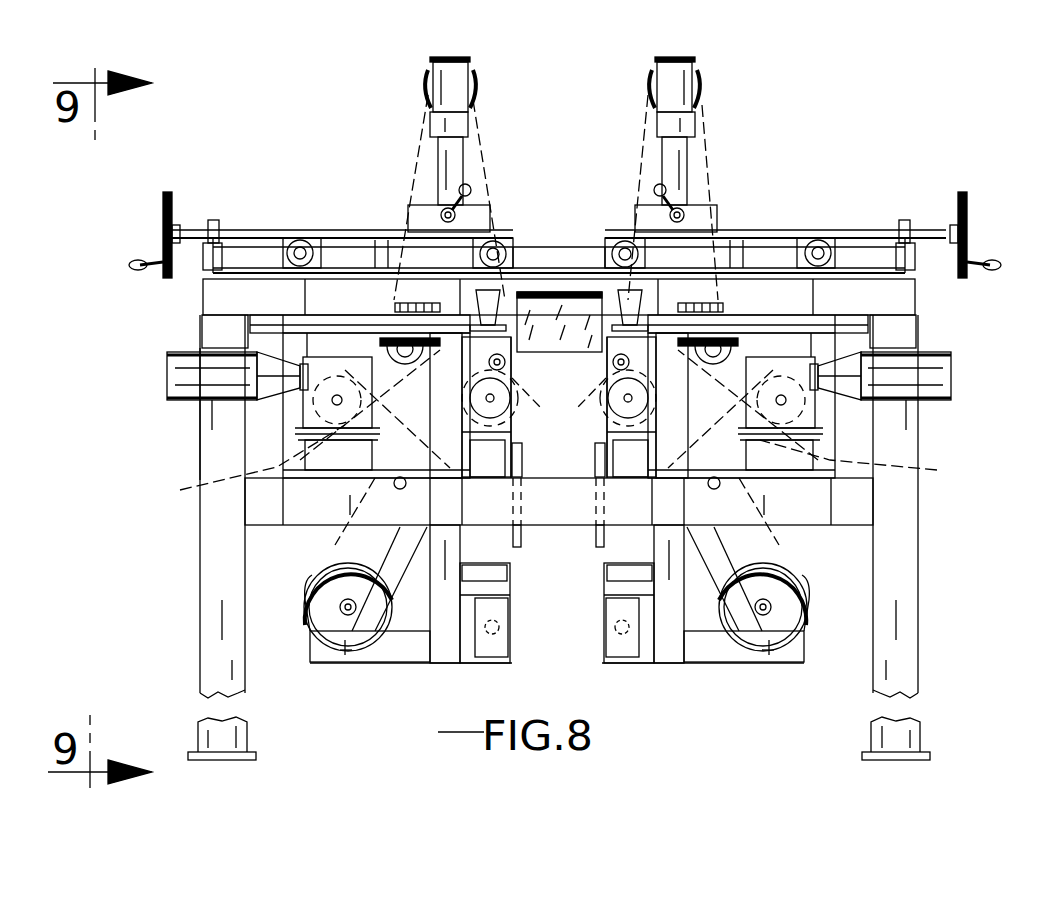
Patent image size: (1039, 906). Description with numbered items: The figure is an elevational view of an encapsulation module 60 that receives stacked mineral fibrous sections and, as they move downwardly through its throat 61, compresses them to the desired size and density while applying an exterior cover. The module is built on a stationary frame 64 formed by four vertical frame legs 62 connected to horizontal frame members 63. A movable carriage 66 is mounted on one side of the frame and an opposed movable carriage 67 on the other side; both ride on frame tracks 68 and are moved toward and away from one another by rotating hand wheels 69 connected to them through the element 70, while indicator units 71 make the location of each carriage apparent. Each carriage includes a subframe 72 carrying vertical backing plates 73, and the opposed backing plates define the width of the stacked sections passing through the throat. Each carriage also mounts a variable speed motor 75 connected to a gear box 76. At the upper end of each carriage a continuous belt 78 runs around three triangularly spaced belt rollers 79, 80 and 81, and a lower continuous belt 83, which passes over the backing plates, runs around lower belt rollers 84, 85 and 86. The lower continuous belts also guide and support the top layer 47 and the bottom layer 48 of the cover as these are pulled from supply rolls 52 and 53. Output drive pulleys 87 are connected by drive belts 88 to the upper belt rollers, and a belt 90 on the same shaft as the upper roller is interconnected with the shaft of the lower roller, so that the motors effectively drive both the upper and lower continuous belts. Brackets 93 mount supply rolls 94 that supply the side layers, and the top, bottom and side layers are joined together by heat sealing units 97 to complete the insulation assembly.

The top layer 47 is at (335, 560).
The bottom layer 48 is at (785, 565).
The supply roll 52 is at (306, 620).
The supply roll 53 is at (812, 620).
The encapsulation module 60 is at (930, 542).
The throat 61 is at (516, 290).
The vertical frame legs 62 is at (200, 535).
The horizontal frame members 63 is at (240, 330).
The stationary frame 64 is at (184, 424).
The movable carriage 66 is at (412, 676).
The movable carriage 67 is at (702, 677).
The frame tracks 68 is at (333, 242).
The hand wheels 69 is at (172, 196).
The adjusting shaft 70 is at (237, 228).
The indicator units 71 is at (405, 300).
The subframe 72 is at (385, 668).
The vertical backing plates 73 is at (598, 440).
The variable speed motor 75 is at (165, 380).
The gear box 76 is at (303, 407).
The continuous belt 78 is at (482, 126).
The belt roller 79 is at (392, 338).
The belt roller 80 is at (475, 100).
The belt roller 81 is at (559, 397).
The lower continuous belt 83 is at (522, 582).
The lower belt roller 84 is at (559, 407).
The lower belt roller 85 is at (494, 668).
The lower belt roller 86 is at (415, 492).
The output drive pulleys 87 is at (558, 464).
The drive belts 88 is at (312, 316).
The belt 90 is at (559, 405).
The brackets 93 is at (480, 282).
The supply rolls 94 is at (563, 293).
The heat sealing units 97 is at (596, 548).